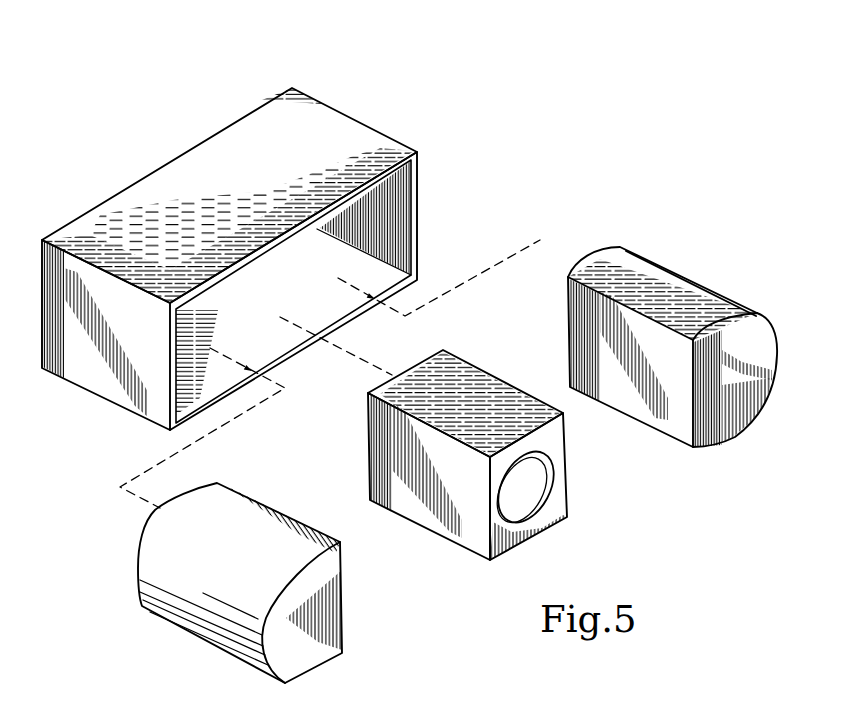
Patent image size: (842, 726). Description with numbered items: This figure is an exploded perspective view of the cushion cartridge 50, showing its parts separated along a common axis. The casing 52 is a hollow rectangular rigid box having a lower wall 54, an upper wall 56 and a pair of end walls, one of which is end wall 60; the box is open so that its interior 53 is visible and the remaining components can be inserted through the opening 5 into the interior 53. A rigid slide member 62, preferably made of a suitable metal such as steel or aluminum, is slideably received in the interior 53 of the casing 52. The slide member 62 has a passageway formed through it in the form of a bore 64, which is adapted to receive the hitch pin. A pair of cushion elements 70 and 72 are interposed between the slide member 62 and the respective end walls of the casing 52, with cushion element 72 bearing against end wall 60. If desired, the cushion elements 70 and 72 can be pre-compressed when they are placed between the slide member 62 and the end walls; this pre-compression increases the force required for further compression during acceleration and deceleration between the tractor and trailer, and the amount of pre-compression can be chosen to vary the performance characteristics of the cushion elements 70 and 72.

The cartridge 50 is at (555, 127).
The casing 52 is at (143, 153).
The interior 53 is at (322, 305).
The lower wall 54 is at (245, 352).
The housing opening 5 is at (395, 215).
The upper wall 56 is at (246, 155).
The end wall 60 is at (133, 347).
The slide member 62 is at (467, 498).
The bore 64 is at (530, 484).
The cushion element 70 is at (690, 252).
The cushion element 72 is at (158, 640).